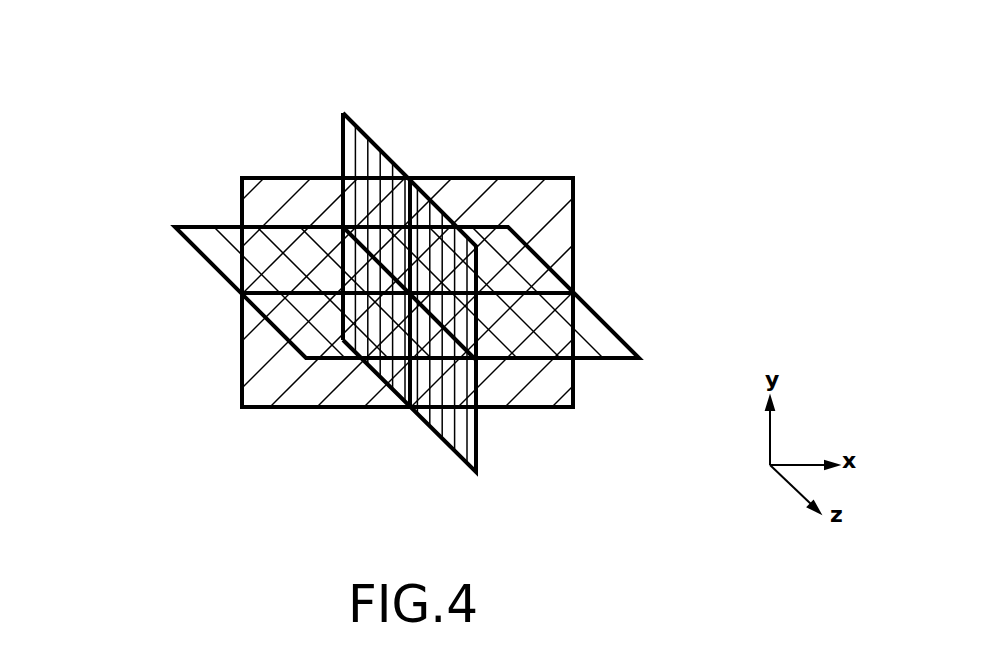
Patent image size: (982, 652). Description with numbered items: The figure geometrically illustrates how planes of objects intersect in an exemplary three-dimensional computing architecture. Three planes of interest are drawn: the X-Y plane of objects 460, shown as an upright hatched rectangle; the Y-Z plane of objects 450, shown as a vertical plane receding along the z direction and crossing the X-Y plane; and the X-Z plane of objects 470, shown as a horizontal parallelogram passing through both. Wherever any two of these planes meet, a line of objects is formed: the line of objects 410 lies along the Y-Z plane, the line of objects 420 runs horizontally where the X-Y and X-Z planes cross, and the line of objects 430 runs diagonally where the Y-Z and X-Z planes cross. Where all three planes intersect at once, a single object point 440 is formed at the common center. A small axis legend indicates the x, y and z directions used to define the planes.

The line of objects 410 is at (345, 206).
The line of objects 420 is at (527, 288).
The line of objects 430 is at (458, 320).
The single object point 440 is at (405, 300).
The Y-Z plane of objects 450 is at (357, 128).
The X-Y plane of objects 460 is at (521, 178).
The X-Z plane of objects 470 is at (628, 346).